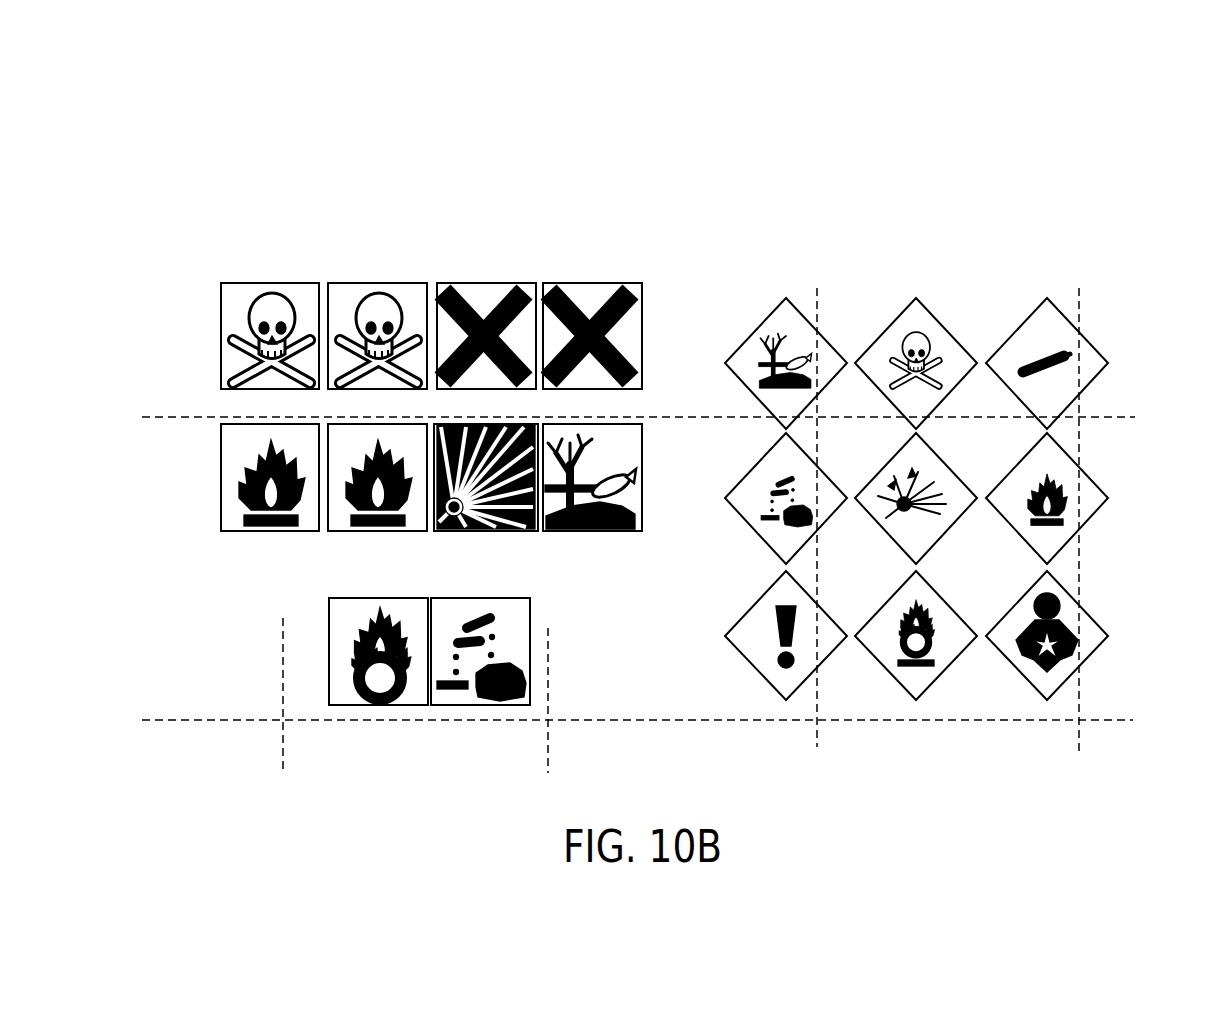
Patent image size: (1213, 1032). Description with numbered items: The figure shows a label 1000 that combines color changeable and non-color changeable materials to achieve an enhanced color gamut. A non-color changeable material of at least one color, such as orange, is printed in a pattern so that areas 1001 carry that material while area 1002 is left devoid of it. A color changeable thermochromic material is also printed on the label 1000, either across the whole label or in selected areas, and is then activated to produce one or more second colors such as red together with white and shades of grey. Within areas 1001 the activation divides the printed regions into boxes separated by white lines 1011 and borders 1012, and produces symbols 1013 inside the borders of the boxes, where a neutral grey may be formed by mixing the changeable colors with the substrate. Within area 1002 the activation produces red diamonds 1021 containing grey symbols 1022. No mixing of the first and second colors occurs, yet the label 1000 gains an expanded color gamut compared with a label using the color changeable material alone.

The label 1000 is at (770, 179).
The areas 1001 is at (221, 354).
The area 1002 is at (1082, 470).
The white lines 1011 is at (643, 473).
The borders 1012 is at (507, 297).
The symbols 1013 is at (610, 297).
The diamonds 1021 is at (1053, 312).
The grey symbols 1022 is at (923, 308).